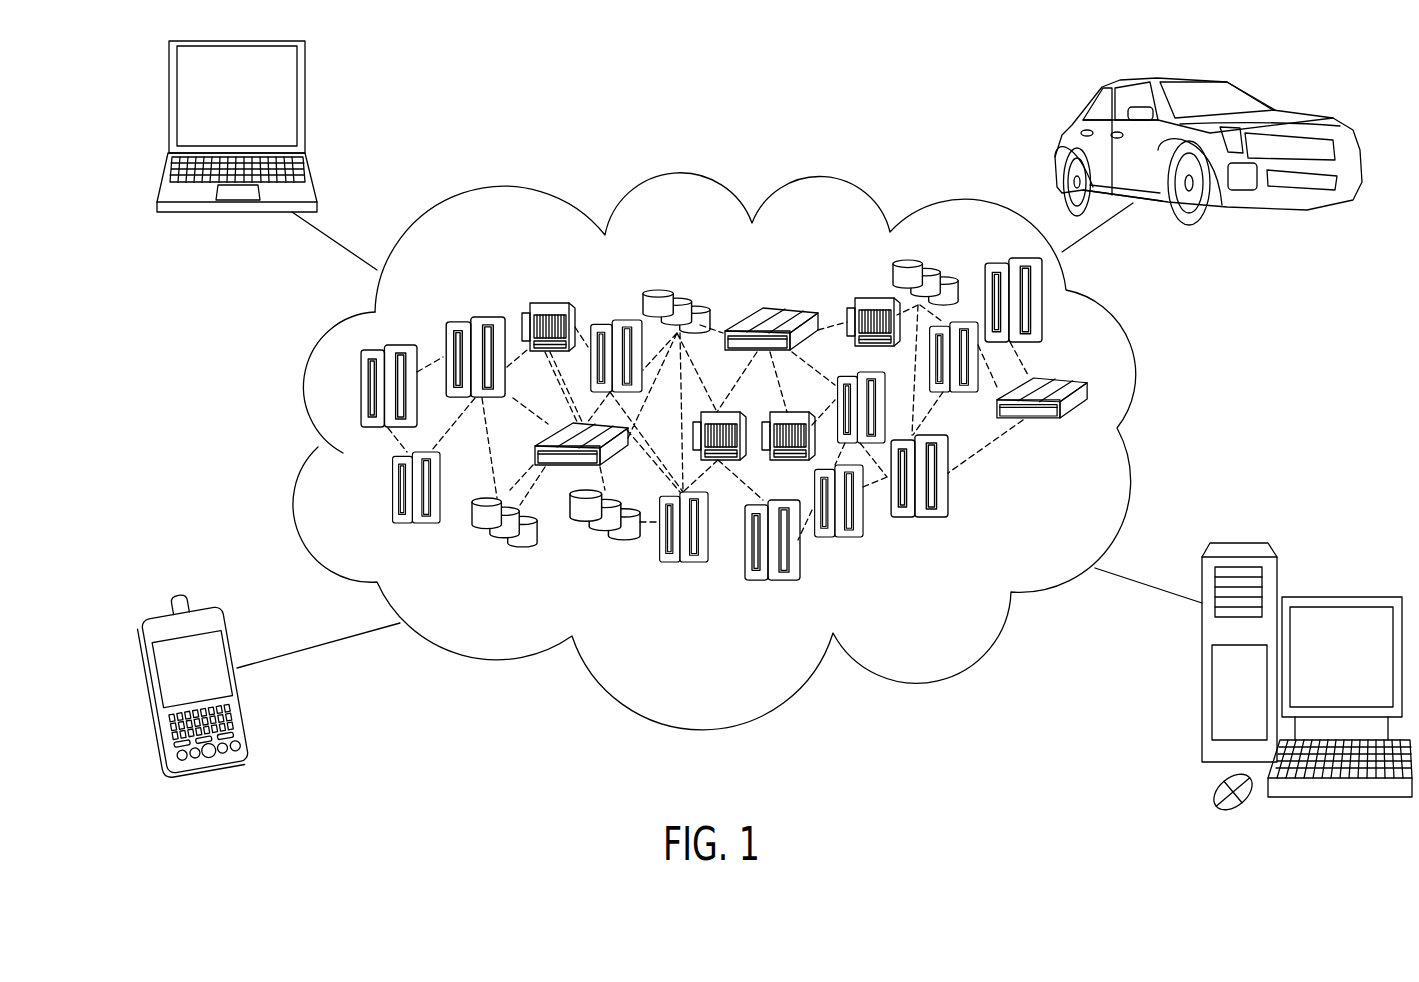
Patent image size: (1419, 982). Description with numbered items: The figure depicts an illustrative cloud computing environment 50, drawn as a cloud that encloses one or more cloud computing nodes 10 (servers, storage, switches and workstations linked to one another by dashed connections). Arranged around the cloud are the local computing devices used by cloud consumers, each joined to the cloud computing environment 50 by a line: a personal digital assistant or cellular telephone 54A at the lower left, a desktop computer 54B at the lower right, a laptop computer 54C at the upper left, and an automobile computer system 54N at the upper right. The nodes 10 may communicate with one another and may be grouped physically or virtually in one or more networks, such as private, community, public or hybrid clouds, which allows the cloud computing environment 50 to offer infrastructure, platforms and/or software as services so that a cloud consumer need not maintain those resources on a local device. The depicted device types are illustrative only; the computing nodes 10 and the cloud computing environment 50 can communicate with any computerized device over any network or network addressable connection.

The cloud computing node 10 is at (1113, 450).
The cloud computing environment 50 is at (1137, 355).
The personal digital assistant or cellular telephone 54A is at (142, 697).
The desktop computer 54B is at (1332, 597).
The laptop computer 54C is at (170, 102).
The automobile computer system 54N is at (1262, 96).